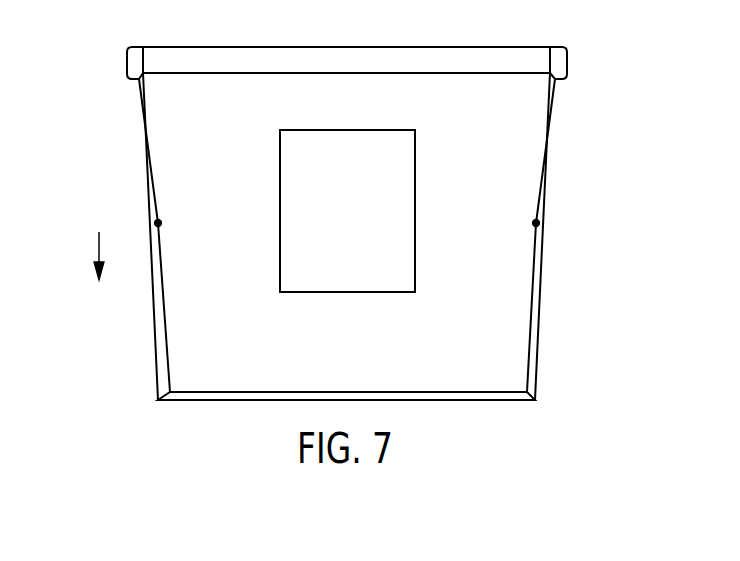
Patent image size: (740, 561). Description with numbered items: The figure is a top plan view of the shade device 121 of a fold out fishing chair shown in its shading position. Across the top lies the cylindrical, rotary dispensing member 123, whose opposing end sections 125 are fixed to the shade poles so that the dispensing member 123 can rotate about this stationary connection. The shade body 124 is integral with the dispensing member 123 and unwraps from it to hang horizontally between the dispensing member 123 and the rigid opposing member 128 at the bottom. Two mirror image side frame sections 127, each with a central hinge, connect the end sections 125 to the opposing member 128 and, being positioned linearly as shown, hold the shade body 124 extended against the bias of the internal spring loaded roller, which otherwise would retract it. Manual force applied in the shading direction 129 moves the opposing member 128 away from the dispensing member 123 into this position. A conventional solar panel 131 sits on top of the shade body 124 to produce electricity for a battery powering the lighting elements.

The shade device 121 is at (600, 183).
The dispensing member 123 is at (510, 62).
The shade body 124 is at (165, 102).
The end sections 125 is at (138, 62).
The side frame sections 127 is at (531, 308).
The opposing member 128 is at (468, 395).
The shading direction 129 is at (99, 250).
The solar panel 131 is at (359, 208).